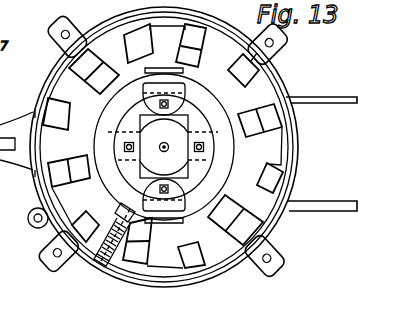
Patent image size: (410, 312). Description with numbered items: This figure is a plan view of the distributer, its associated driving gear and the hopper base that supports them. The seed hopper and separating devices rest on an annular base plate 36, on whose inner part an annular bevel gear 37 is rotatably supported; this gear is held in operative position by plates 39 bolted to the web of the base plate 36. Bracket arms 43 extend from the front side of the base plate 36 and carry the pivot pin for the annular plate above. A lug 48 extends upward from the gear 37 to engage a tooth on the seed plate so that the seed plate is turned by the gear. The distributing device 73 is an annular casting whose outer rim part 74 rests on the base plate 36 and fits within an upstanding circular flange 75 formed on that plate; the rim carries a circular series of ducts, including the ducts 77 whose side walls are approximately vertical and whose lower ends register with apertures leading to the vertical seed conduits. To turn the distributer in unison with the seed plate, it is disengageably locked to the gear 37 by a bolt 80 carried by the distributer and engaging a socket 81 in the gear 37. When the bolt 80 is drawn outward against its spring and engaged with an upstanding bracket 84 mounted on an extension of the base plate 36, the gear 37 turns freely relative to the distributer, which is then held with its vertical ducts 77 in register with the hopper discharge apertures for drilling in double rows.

The annular base plate 36 is at (257, 98).
The annular bevel gear 37 is at (227, 160).
The plates 39 is at (180, 107).
The bracket arms 43 is at (343, 104).
The lug 48 is at (53, 189).
The distributing device 73 is at (282, 162).
The outer rim part 74 is at (173, 275).
The upstanding circular flange 75 is at (227, 263).
The distributer ducts 77 is at (53, 106).
The bolt 80 is at (120, 203).
The socket 81 is at (133, 209).
The upstanding bracket 84 is at (37, 231).